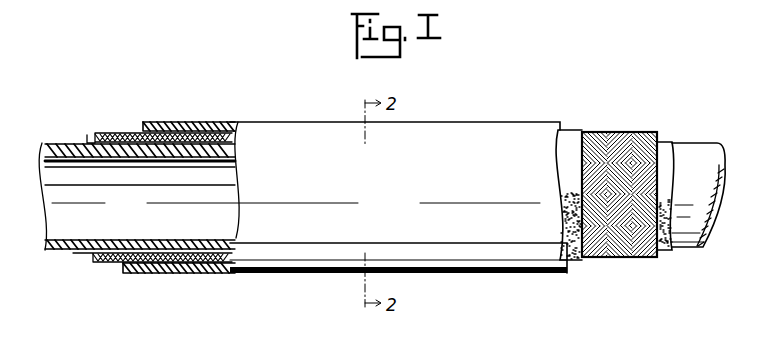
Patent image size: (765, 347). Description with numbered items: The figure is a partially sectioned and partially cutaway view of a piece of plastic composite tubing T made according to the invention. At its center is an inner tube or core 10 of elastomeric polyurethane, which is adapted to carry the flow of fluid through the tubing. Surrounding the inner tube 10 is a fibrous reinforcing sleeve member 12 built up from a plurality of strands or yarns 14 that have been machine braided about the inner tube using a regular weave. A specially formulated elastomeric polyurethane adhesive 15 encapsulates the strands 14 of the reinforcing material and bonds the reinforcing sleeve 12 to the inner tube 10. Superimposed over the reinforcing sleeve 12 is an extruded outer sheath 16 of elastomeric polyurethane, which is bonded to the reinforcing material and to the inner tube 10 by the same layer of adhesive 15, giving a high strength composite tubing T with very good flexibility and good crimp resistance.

The inner tube 10 is at (55, 250).
The fibrous reinforcing sleeve member 12 is at (95, 256).
The strands 14 is at (642, 131).
The elastomeric polyurethane adhesive 15 is at (122, 134).
The outer sheath 16 is at (177, 274).
The composite tubing T is at (477, 117).